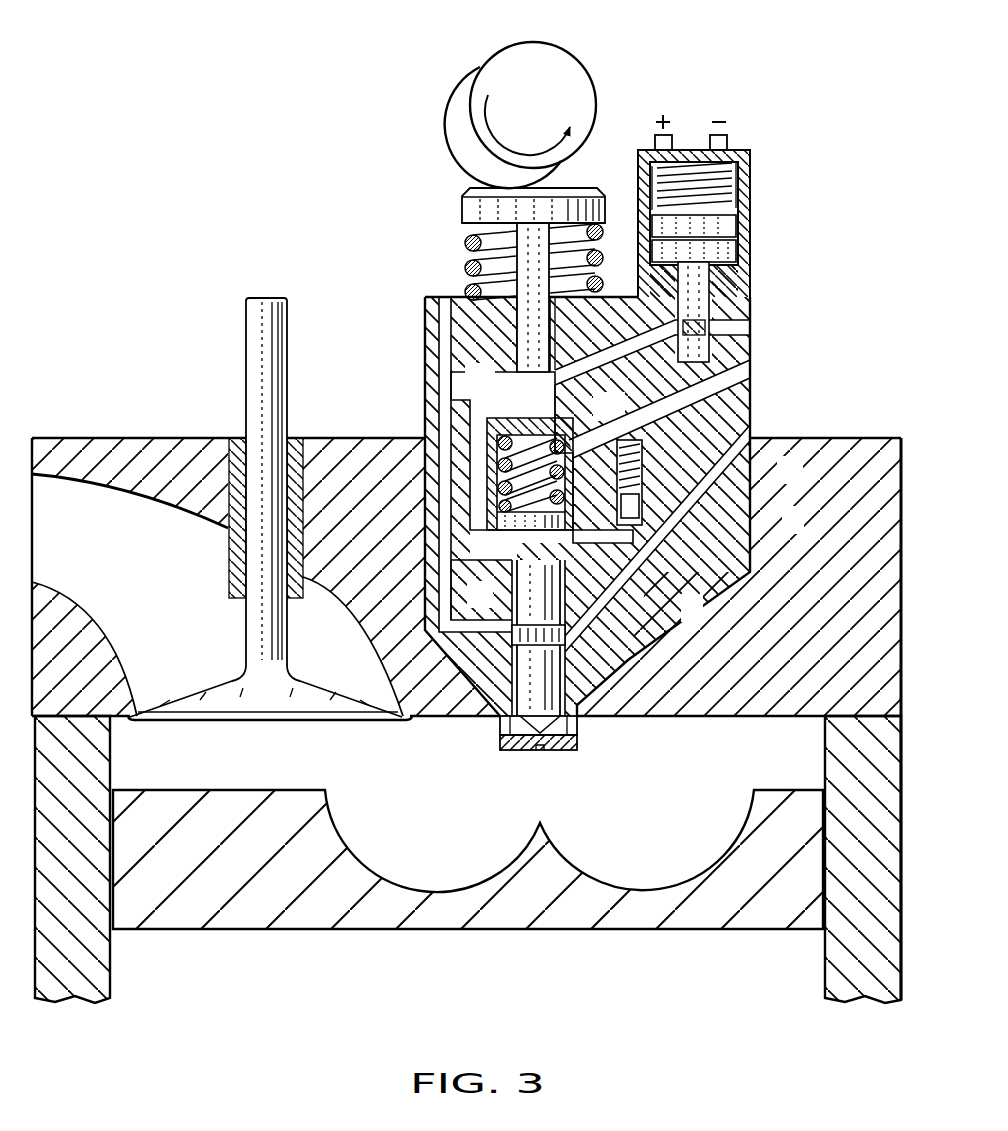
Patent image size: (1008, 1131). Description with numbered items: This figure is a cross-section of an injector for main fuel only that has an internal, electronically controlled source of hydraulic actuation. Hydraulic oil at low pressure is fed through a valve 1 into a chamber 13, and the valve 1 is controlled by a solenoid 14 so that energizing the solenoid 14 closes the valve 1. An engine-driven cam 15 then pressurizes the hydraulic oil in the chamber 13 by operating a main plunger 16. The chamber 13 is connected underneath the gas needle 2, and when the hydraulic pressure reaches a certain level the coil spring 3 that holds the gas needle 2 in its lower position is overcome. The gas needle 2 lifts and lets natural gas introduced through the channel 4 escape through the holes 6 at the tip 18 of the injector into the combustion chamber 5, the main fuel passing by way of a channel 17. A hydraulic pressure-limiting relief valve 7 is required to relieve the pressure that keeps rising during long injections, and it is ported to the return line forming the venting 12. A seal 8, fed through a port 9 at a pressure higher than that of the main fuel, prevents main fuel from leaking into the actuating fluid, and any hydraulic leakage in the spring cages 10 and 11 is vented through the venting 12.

The valve 1 is at (714, 296).
The gas needle 2 is at (574, 584).
The coil spring 3 is at (508, 476).
The channel 4 is at (753, 434).
The combustion chamber 5 is at (669, 856).
The holes 6 is at (500, 736).
The relief valve 7 is at (642, 512).
The seal 8 is at (505, 622).
The port 9 is at (445, 297).
The spring cage 10 is at (561, 425).
The spring cage 11 is at (647, 458).
The venting 12 is at (753, 386).
The chamber 13 is at (532, 392).
The solenoid 14 is at (730, 191).
The engine-driven cam 15 is at (592, 64).
The main plunger 16 is at (462, 200).
The channel 17 is at (573, 673).
The tip 18 is at (543, 751).